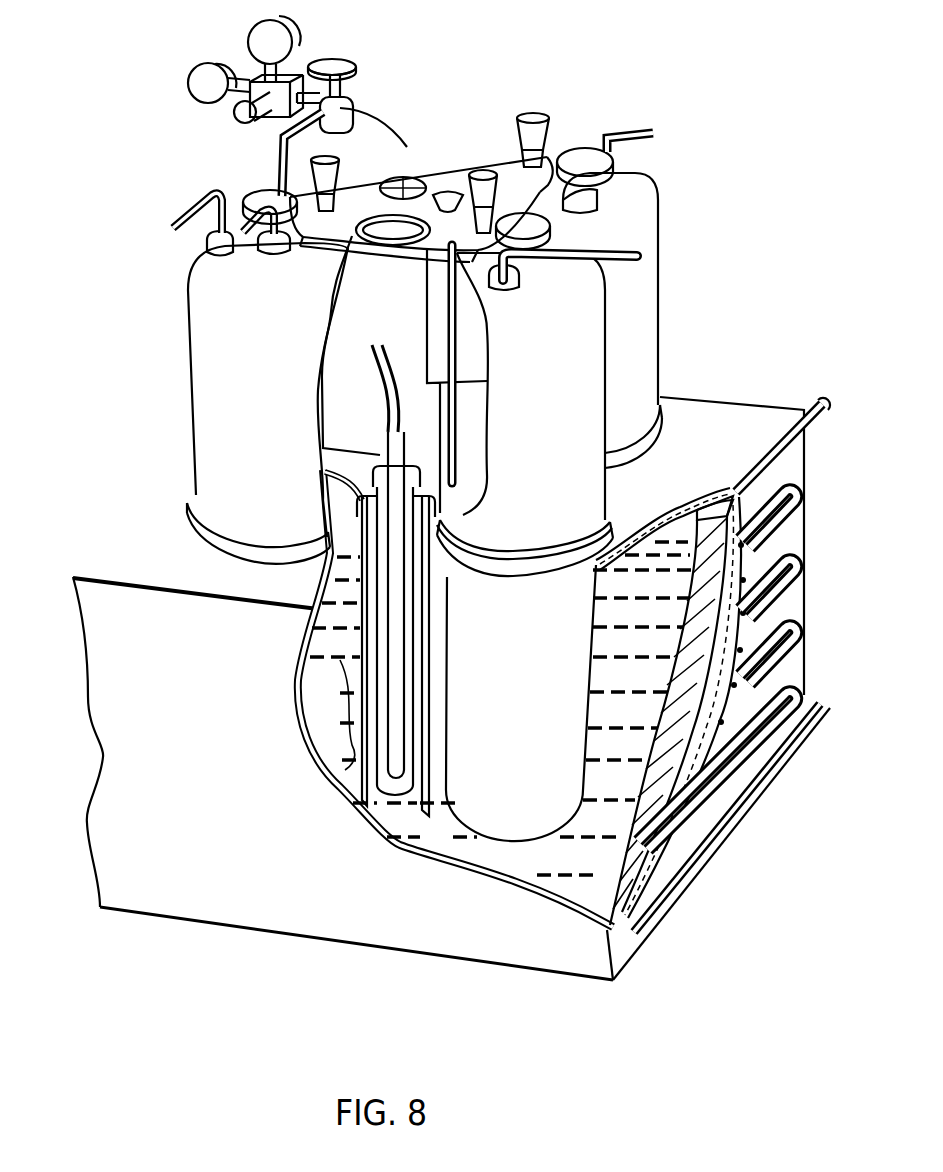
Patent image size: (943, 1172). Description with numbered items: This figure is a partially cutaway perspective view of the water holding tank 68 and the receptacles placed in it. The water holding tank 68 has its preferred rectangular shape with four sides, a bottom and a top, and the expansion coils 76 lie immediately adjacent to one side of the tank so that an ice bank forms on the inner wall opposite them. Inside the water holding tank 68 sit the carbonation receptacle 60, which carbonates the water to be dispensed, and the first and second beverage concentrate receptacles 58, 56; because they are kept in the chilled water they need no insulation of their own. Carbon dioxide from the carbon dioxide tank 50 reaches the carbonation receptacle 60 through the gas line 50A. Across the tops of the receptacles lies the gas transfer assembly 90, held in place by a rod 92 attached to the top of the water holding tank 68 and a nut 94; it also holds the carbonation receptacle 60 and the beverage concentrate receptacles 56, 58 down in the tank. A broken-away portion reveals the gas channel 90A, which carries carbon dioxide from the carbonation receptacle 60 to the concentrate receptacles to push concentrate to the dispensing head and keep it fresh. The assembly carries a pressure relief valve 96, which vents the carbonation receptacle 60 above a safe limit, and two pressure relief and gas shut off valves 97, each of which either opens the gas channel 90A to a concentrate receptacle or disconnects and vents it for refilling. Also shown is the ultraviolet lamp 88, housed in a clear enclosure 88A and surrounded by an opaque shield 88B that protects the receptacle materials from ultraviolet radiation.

The carbon dioxide tank 50 is at (371, 106).
The gas line 50A is at (278, 134).
The second beverage concentrate receptacle 56 is at (670, 248).
The first beverage concentrate receptacle 58 is at (618, 358).
The carbonation receptacle 60 is at (178, 321).
The water holding tank 68 is at (203, 733).
The expansion coils 76 is at (775, 655).
The ultraviolet lamp 88 is at (354, 681).
The enclosure 88A is at (396, 802).
The opaque shield 88B is at (366, 775).
The gas transfer assembly 90 is at (421, 157).
The gas channel 90A is at (400, 182).
The rod 92 is at (448, 316).
The nut 94 is at (443, 192).
The pressure relief valve 96 is at (310, 182).
The pressure relief and gas shut off valve 97 is at (537, 133).